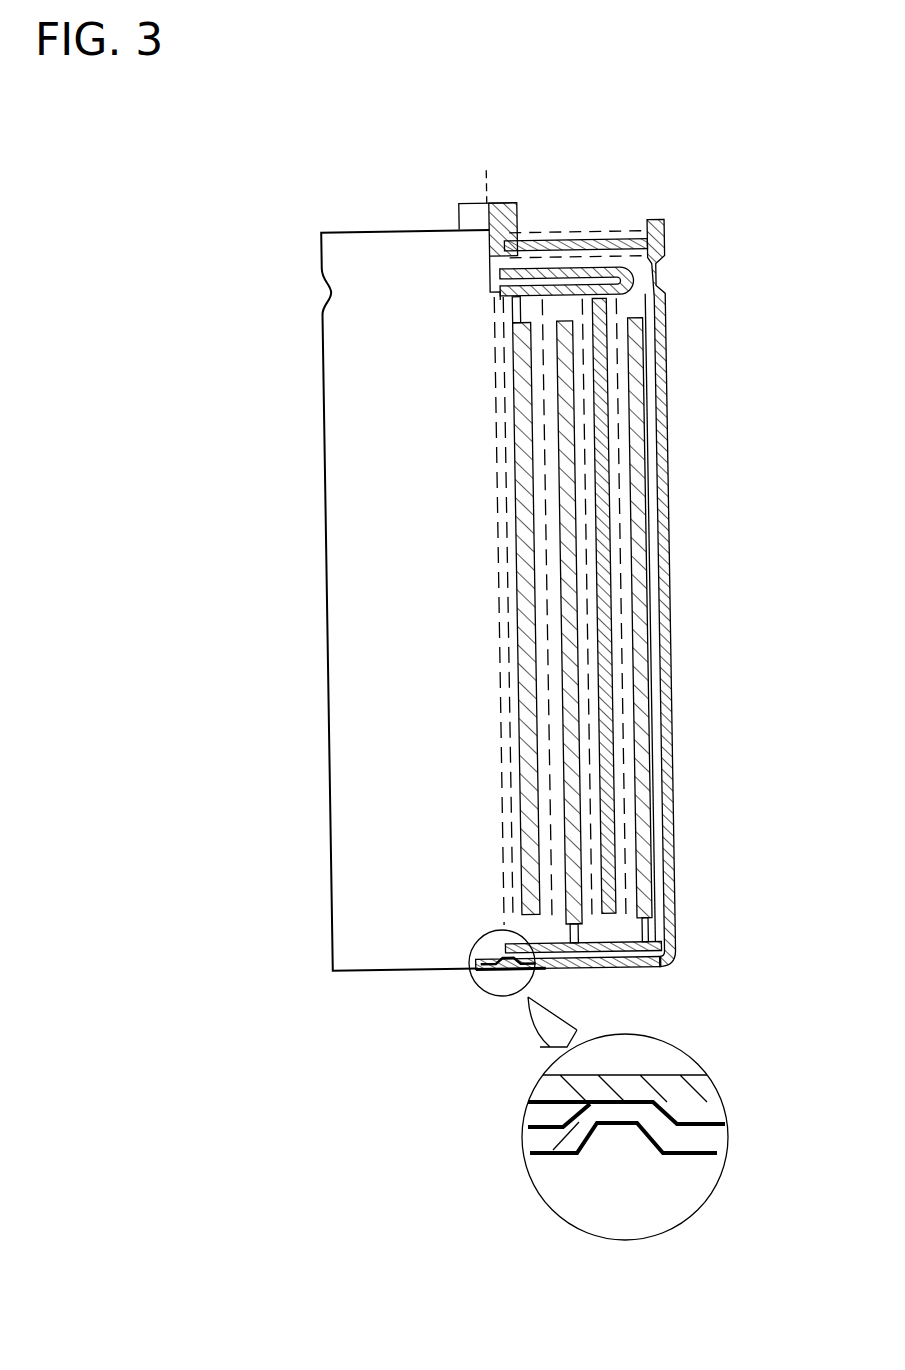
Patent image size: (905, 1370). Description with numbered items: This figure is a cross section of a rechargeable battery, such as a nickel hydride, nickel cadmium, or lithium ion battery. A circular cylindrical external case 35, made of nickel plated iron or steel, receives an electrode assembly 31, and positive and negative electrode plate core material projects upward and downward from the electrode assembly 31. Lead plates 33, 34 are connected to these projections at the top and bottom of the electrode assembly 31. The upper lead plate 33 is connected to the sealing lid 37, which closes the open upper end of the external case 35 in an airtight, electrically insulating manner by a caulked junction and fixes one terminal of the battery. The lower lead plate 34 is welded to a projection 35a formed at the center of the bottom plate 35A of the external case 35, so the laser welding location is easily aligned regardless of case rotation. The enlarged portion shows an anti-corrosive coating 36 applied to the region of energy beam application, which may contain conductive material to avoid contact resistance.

The electrode assembly 31 is at (634, 305).
The lead plate 33 is at (492, 281).
The lead plate 34 is at (607, 945).
The external case 35 is at (672, 624).
The bottom plate 35A is at (640, 968).
The projection 35a is at (617, 1112).
The anti-corrosive coating 36 is at (690, 1158).
The sealing lid 37 is at (586, 243).